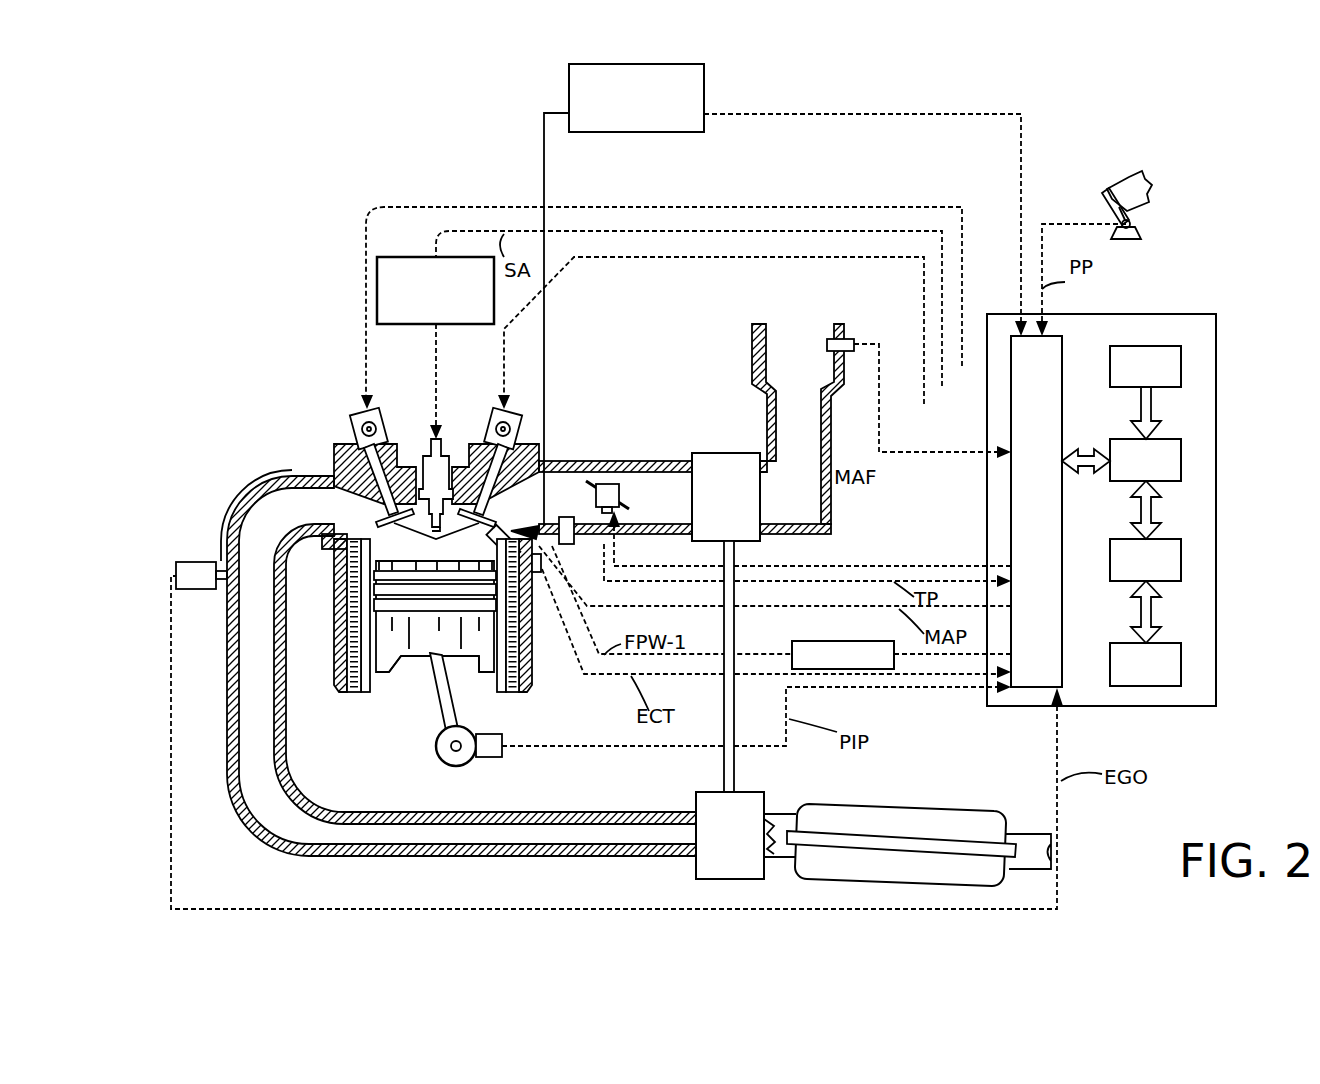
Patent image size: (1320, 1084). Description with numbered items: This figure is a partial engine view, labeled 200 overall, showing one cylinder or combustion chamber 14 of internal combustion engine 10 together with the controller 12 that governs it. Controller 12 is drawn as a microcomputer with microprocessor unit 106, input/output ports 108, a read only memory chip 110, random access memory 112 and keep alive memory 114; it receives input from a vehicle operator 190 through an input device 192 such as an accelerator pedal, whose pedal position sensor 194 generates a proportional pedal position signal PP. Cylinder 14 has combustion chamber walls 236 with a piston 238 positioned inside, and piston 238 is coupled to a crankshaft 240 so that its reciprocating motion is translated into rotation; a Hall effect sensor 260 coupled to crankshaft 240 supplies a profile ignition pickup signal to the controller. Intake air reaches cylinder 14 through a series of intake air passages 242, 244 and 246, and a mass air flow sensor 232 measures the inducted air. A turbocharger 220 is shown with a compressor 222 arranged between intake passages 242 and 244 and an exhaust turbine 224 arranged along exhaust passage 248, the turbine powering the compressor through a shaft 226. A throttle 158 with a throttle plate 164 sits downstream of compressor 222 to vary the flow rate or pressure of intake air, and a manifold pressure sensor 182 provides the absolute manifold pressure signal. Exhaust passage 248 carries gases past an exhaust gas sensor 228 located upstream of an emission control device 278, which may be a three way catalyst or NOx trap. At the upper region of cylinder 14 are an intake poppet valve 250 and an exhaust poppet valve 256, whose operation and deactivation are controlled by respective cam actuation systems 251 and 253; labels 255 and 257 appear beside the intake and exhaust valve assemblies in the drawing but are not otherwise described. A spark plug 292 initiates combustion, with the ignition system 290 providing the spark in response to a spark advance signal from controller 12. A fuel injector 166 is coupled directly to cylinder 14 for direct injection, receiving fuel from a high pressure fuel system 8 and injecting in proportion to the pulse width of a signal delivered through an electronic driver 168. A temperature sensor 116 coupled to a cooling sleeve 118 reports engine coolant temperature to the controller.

The engine system 200 is at (152, 144).
The internal combustion engine 10 is at (282, 275).
The high pressure fuel system 8 is at (705, 80).
The ignition system 290 is at (415, 243).
The vehicle operator 190 is at (1160, 188).
The input device 192 is at (1108, 195).
The pedal position sensor 194 is at (1135, 225).
The controller 12 is at (1218, 320).
The input/output ports 108 is at (1065, 345).
The read only memory chip 110 is at (1182, 367).
The microprocessor unit 106 is at (1182, 457).
The random access memory 112 is at (1182, 565).
The keep alive memory 114 is at (1182, 667).
The mass air flow sensor 232 is at (850, 340).
The intake air passage 242 is at (820, 374).
The compressor 222 is at (710, 454).
The throttle plate 164 is at (545, 485).
The throttle 158 is at (612, 485).
The intake air passage 246 is at (585, 509).
The intake air passage 244 is at (681, 509).
The manifold pressure sensor 182 is at (568, 548).
The fuel injector 166 is at (495, 537).
The exhaust passage 248 is at (328, 519).
The exhaust gas sensor 228 is at (177, 570).
The cylinder 14 is at (335, 568).
The intake poppet valve 250 is at (450, 500).
The spark plug 292 is at (430, 470).
The cam actuation system 253 is at (378, 412).
The exhaust valve 257 is at (355, 432).
The exhaust poppet valve 256 is at (392, 515).
The cam actuation system 251 is at (490, 412).
The intake valve 255 is at (520, 430).
The combustion chamber walls 236 is at (372, 690).
The cooling sleeve 118 is at (515, 645).
The temperature sensor 116 is at (540, 578).
The piston 238 is at (418, 643).
The crankshaft 240 is at (450, 765).
The Hall effect sensor 260 is at (490, 760).
The shaft 226 is at (737, 752).
The exhaust turbine 224 is at (697, 868).
The turbocharger 220 is at (712, 776).
The emission control device 278 is at (966, 810).
The electronic driver 168 is at (795, 645).